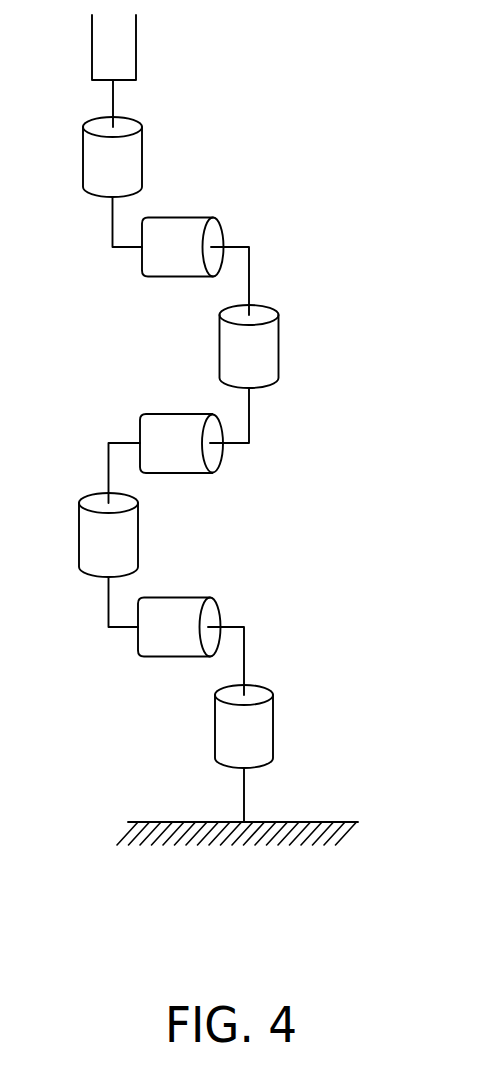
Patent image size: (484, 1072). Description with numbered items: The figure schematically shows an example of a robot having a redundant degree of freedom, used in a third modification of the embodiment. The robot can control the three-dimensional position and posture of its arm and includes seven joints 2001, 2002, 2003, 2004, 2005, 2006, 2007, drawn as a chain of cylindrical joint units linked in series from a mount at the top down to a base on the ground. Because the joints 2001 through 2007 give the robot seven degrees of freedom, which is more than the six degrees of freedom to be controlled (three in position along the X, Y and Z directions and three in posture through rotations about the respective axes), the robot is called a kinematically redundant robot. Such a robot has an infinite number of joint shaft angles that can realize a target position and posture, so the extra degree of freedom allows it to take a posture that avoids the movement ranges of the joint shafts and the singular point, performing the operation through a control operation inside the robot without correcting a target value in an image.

The joint 2001 is at (134, 151).
The joint 2002 is at (198, 222).
The joint 2003 is at (263, 345).
The joint 2004 is at (187, 463).
The joint 2005 is at (128, 540).
The joint 2006 is at (193, 602).
The joint 2007 is at (259, 732).